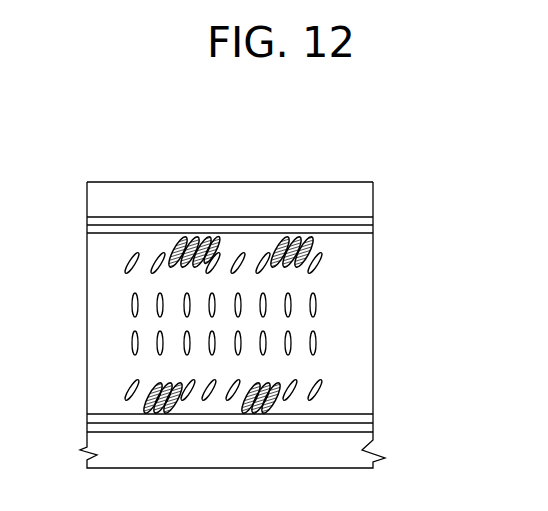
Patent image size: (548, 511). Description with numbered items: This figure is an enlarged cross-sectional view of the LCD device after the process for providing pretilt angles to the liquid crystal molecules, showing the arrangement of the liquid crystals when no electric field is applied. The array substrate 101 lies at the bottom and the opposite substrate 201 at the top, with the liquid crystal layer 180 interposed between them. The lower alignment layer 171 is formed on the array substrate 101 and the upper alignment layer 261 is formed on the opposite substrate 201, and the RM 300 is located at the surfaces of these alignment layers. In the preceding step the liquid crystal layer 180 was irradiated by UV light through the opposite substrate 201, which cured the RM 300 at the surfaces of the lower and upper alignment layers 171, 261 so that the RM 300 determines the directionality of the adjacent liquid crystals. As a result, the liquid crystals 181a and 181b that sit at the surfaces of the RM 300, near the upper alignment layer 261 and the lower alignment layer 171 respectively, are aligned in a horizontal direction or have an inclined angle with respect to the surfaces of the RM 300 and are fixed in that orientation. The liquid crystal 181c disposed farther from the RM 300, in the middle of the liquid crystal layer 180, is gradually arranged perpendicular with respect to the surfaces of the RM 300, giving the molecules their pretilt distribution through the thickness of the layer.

The opposite substrate 201 is at (373, 194).
The upper alignment layer 261 is at (373, 229).
The liquid crystal layer 180 is at (368, 357).
The liquid crystal 181a is at (320, 262).
The liquid crystal 181b is at (320, 389).
The liquid crystal 181c is at (316, 305).
The RM 300 is at (284, 240).
The lower alignment layer 171 is at (373, 422).
The array substrate 101 is at (378, 443).